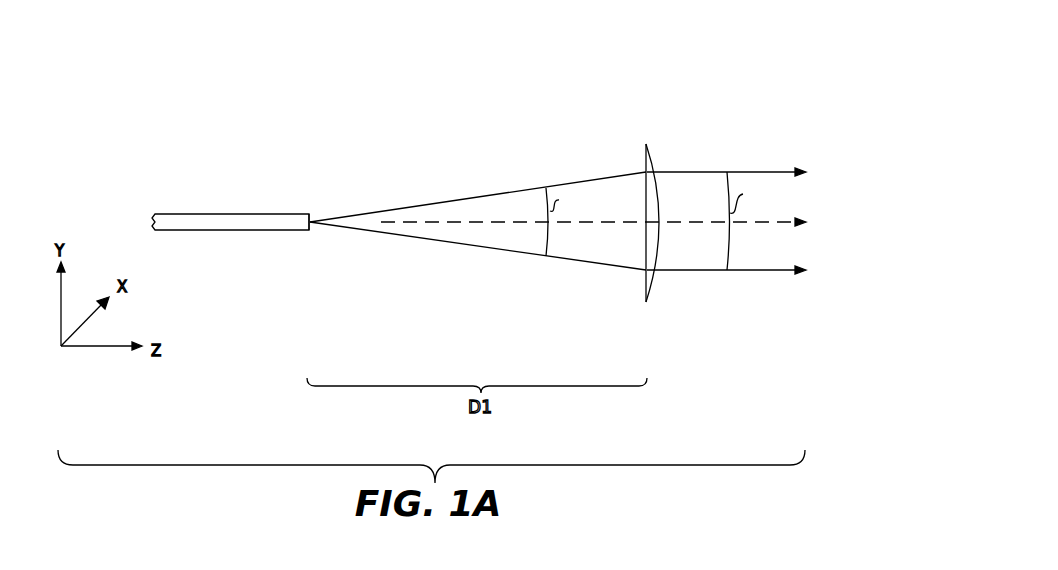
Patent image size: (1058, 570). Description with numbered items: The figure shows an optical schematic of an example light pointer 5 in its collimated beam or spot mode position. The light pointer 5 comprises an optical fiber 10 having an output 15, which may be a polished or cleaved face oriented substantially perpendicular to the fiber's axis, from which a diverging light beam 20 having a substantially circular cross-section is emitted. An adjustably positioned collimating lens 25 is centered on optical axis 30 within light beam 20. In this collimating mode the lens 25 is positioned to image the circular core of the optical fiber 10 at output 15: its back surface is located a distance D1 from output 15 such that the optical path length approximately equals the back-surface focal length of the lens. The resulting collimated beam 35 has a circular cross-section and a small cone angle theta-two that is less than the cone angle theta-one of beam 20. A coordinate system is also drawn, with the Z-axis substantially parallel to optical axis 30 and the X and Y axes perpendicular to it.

The light pointer 5 is at (479, 179).
The optical fiber 10 is at (258, 213).
The output 15 is at (319, 212).
The diverging light beam 20 is at (565, 266).
The collimating lens 25 is at (646, 143).
The optical axis 30 is at (452, 222).
The collimated beam 35 is at (757, 280).